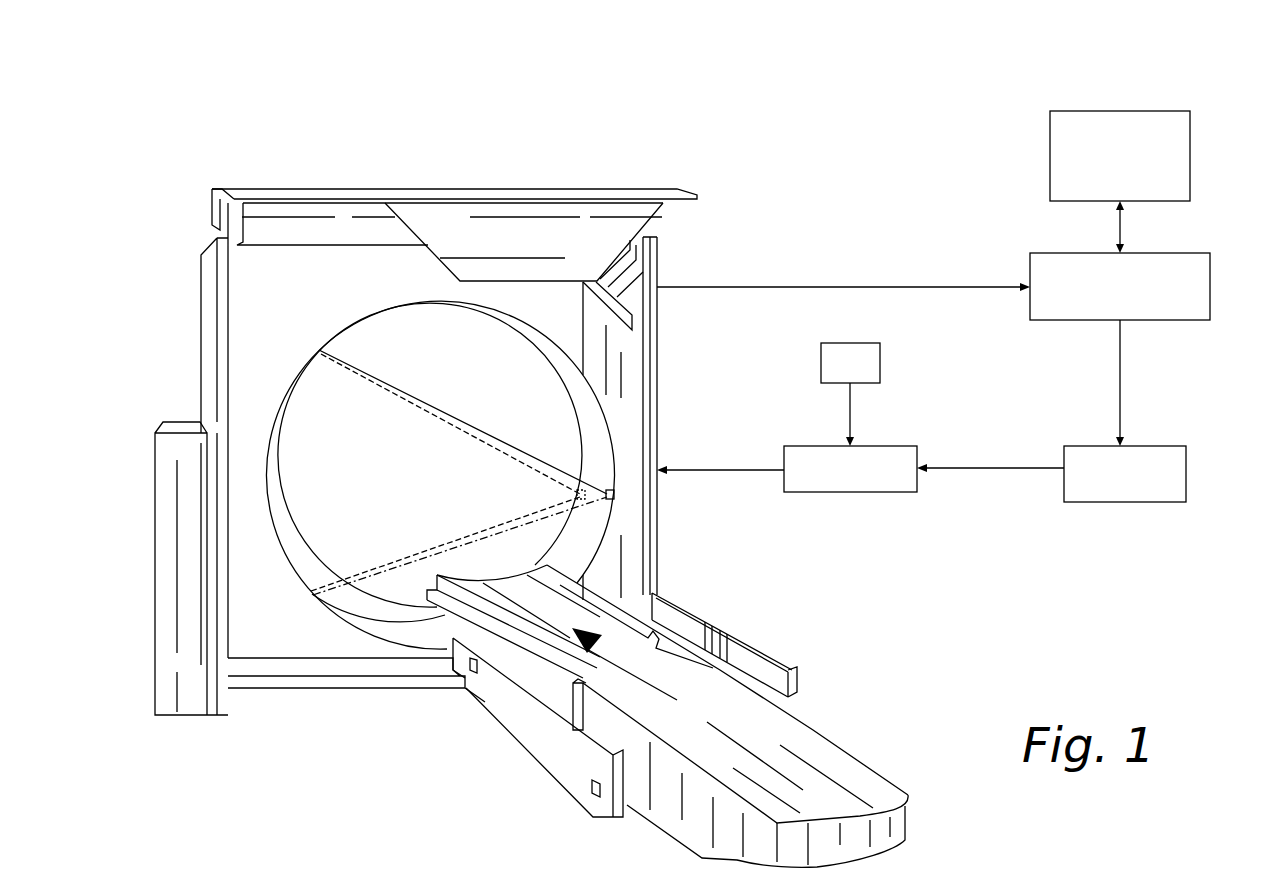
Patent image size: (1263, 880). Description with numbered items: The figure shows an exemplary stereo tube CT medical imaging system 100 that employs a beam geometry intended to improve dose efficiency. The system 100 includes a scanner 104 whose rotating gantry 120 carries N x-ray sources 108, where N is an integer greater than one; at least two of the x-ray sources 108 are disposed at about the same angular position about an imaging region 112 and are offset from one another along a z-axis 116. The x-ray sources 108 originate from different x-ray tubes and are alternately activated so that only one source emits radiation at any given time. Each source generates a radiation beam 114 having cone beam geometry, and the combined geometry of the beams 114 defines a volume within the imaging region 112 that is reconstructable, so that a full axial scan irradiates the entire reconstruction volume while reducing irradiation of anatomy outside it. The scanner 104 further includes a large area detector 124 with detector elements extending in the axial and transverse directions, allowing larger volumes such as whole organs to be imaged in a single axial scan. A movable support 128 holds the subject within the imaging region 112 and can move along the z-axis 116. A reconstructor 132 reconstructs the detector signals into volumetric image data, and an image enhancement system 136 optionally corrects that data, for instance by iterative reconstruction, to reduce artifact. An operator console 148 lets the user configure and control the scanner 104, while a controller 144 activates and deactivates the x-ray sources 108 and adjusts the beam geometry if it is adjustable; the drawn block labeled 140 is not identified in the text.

The medical imaging system 100 is at (262, 126).
The scanner 104 is at (376, 187).
The x-ray sources 108 is at (622, 476).
The imaging region 112 is at (402, 487).
The radiation beams 114 is at (459, 468).
The z-axis 116 is at (663, 678).
The rotating gantry 120 is at (355, 325).
The detector 124 is at (283, 463).
The support 128 is at (840, 770).
The reconstructor 132 is at (1178, 253).
The image enhancement system 136 is at (1180, 111).
The operator console 140 is at (1165, 446).
The controller 144 is at (893, 446).
The operator console 148 is at (853, 343).